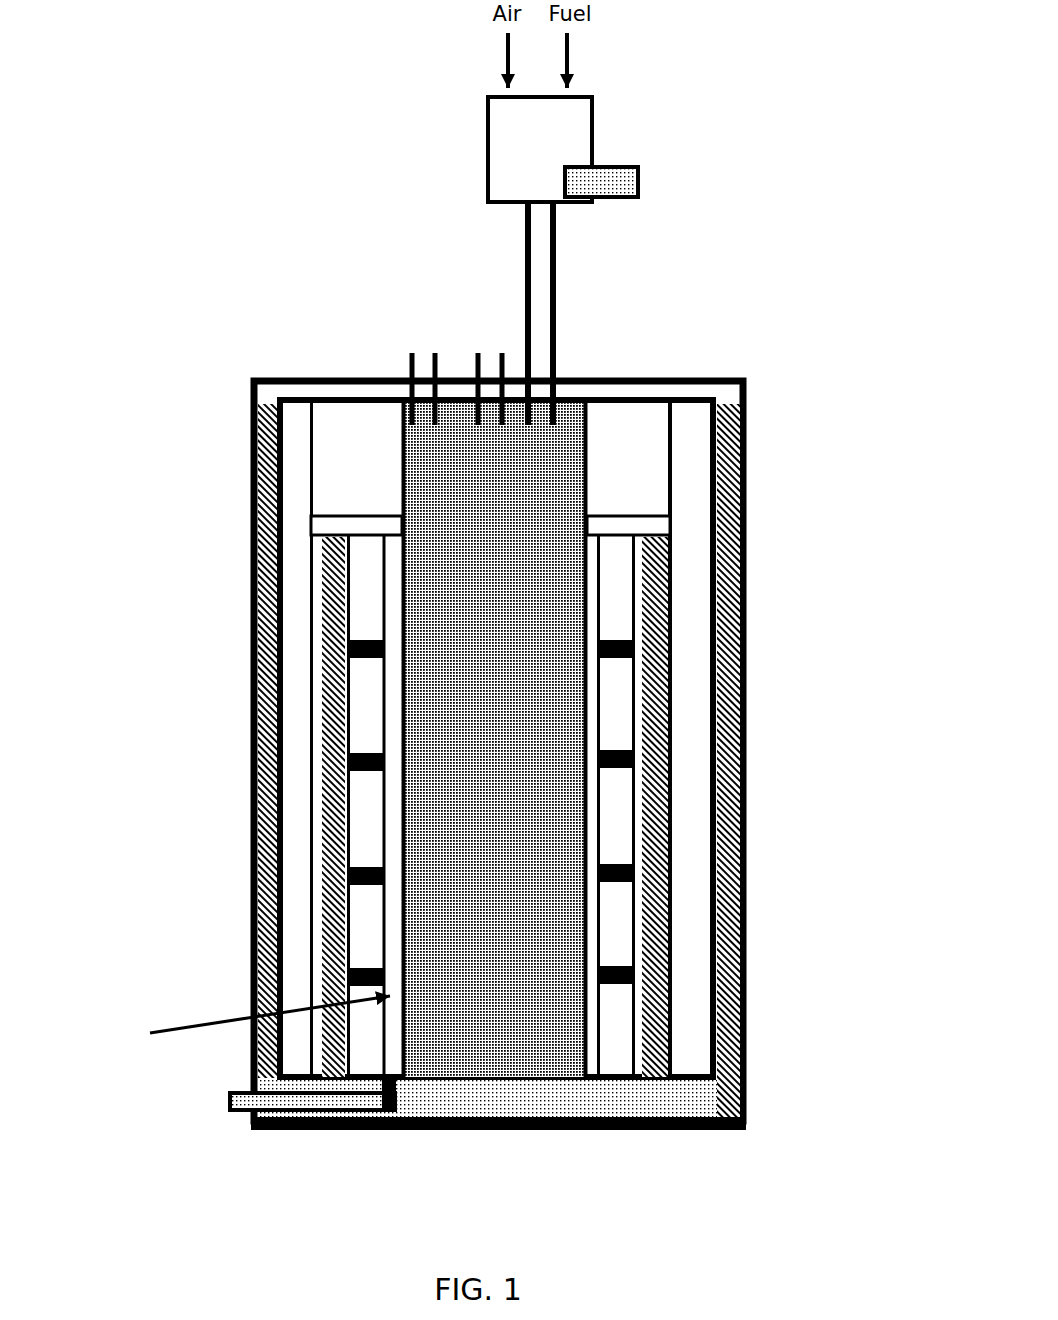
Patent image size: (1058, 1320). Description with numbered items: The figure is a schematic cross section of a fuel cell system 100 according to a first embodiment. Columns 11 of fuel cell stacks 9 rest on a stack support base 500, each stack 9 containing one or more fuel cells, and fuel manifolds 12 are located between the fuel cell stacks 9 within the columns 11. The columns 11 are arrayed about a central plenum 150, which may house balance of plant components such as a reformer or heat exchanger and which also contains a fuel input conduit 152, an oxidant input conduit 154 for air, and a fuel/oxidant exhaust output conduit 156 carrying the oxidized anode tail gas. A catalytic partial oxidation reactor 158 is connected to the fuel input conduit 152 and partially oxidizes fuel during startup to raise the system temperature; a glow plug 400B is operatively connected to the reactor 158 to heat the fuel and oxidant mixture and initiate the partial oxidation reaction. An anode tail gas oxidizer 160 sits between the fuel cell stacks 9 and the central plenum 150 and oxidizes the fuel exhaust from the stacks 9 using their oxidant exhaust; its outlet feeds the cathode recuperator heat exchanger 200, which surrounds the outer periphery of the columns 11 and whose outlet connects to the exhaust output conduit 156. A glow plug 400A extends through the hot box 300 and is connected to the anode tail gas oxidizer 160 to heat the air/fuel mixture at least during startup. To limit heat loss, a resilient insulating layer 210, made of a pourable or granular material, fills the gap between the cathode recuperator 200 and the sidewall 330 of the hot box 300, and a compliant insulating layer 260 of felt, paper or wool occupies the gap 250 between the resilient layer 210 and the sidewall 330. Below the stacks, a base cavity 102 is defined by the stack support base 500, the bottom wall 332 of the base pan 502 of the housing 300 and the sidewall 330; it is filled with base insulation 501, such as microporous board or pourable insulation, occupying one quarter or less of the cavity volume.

The fuel cell system 100 is at (330, 230).
The base cavity 102 is at (537, 1150).
The central plenum 150 is at (476, 670).
The fuel input conduit 152 is at (556, 392).
The oxidant input conduit 154 is at (433, 350).
The fuel/oxidant exhaust output conduit 156 is at (480, 350).
The catalytic partial oxidation reactor 158 is at (556, 165).
The anode tail gas oxidizer 160 is at (242, 1022).
The cathode recuperator heat exchanger 200 is at (323, 545).
The resilient insulating layer 210 is at (295, 660).
The gap 250 is at (262, 395).
The compliant insulating layer 260 is at (265, 570).
The hot box 300 is at (308, 342).
The sidewall 330 is at (242, 730).
The bottom wall 332 is at (600, 1130).
The glow plug 400A is at (232, 1101).
The glow plug 400B is at (640, 181).
The stack support base 500 is at (693, 1083).
The base insulation 501 is at (412, 1103).
The base pan 502 is at (755, 1103).
The fuel cell stack 9 is at (620, 820).
The column 11 is at (345, 1042).
The fuel manifold 12 is at (345, 880).